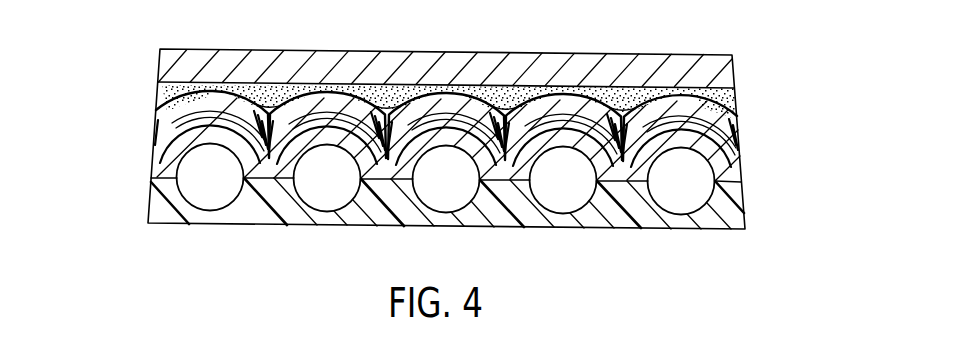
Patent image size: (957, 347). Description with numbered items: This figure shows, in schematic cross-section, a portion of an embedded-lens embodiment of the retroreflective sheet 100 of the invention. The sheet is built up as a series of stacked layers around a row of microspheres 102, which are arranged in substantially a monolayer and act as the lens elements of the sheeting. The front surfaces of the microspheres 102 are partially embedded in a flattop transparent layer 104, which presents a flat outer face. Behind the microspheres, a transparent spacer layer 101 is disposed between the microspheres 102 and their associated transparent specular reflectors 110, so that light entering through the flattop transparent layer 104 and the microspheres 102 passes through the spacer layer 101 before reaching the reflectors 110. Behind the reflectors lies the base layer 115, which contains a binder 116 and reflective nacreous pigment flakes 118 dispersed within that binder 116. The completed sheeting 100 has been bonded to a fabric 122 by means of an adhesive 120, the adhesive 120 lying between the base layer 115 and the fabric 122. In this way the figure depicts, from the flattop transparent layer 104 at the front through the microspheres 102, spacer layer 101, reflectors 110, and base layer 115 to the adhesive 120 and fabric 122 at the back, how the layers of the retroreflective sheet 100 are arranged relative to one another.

The retroreflective sheet 100 is at (139, 198).
The transparent spacer layer 101 is at (400, 167).
The microspheres 102 is at (575, 200).
The flattop transparent layer 104 is at (513, 207).
The transparent specular reflectors 110 is at (181, 114).
The base layer 115 is at (745, 117).
The binder 116 is at (722, 114).
The reflective nacreous pigment flakes 118 is at (158, 130).
The adhesive 120 is at (180, 88).
The fabric 122 is at (212, 60).